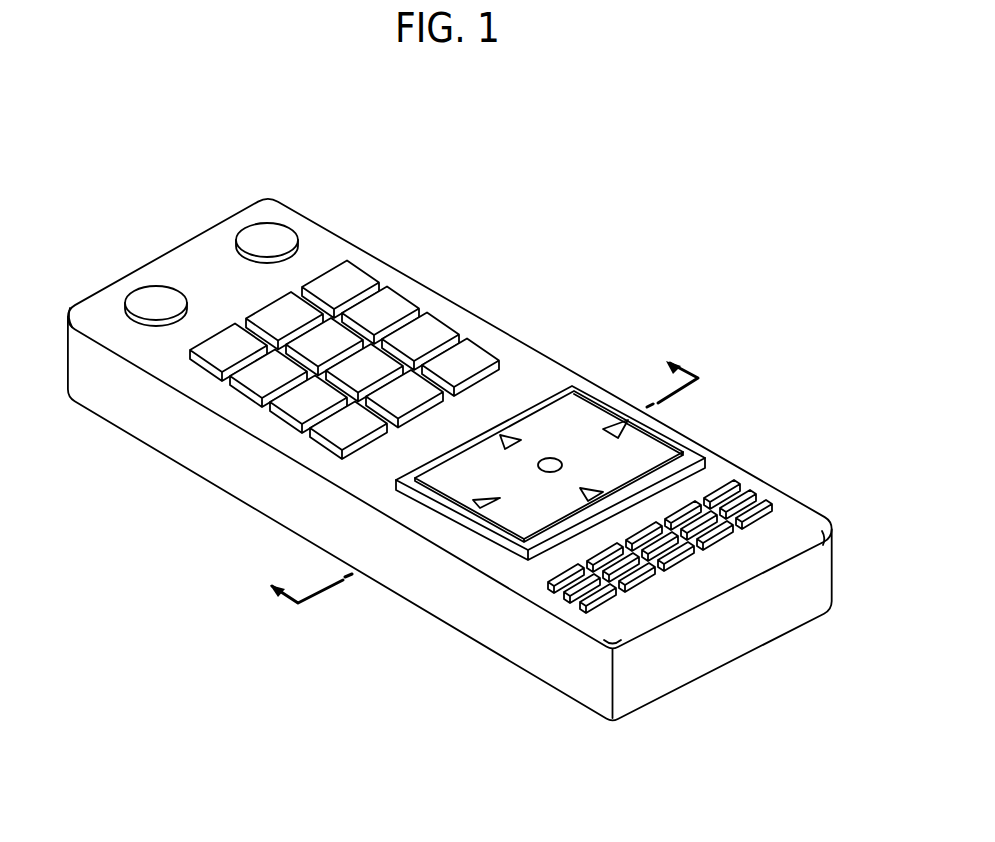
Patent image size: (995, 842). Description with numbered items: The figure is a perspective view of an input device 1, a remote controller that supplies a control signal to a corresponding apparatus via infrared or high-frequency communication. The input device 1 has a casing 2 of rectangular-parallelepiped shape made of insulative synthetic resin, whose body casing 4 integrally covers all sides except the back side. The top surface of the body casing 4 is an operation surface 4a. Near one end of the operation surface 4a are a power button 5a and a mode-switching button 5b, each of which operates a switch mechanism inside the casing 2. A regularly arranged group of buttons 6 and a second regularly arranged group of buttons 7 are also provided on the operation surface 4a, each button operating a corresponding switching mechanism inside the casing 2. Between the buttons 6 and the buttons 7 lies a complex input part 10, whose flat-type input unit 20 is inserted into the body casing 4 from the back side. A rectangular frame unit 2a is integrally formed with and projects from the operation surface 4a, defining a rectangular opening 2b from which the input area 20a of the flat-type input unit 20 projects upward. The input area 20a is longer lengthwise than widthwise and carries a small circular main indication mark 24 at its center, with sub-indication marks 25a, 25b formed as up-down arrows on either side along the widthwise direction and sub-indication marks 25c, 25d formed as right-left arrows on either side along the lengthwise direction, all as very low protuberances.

The input device 1 is at (571, 257).
The casing 2 is at (227, 463).
The frame unit 2a is at (472, 523).
The opening 2b is at (511, 548).
The body casing 4 is at (318, 211).
The operation surface 4a is at (200, 262).
The power button 5a is at (262, 238).
The mode-switching button 5b is at (142, 308).
The group of buttons 6 is at (535, 348).
The group of buttons 7 is at (801, 502).
The complex input part 10 is at (617, 400).
The flat-type input unit 20 is at (588, 393).
The input area 20a is at (558, 408).
The main indication mark 24 is at (551, 472).
The sub-indication mark 25a is at (505, 436).
The sub-indication mark 25b is at (593, 492).
The sub-indication mark 25c is at (628, 422).
The sub-indication mark 25d is at (487, 499).